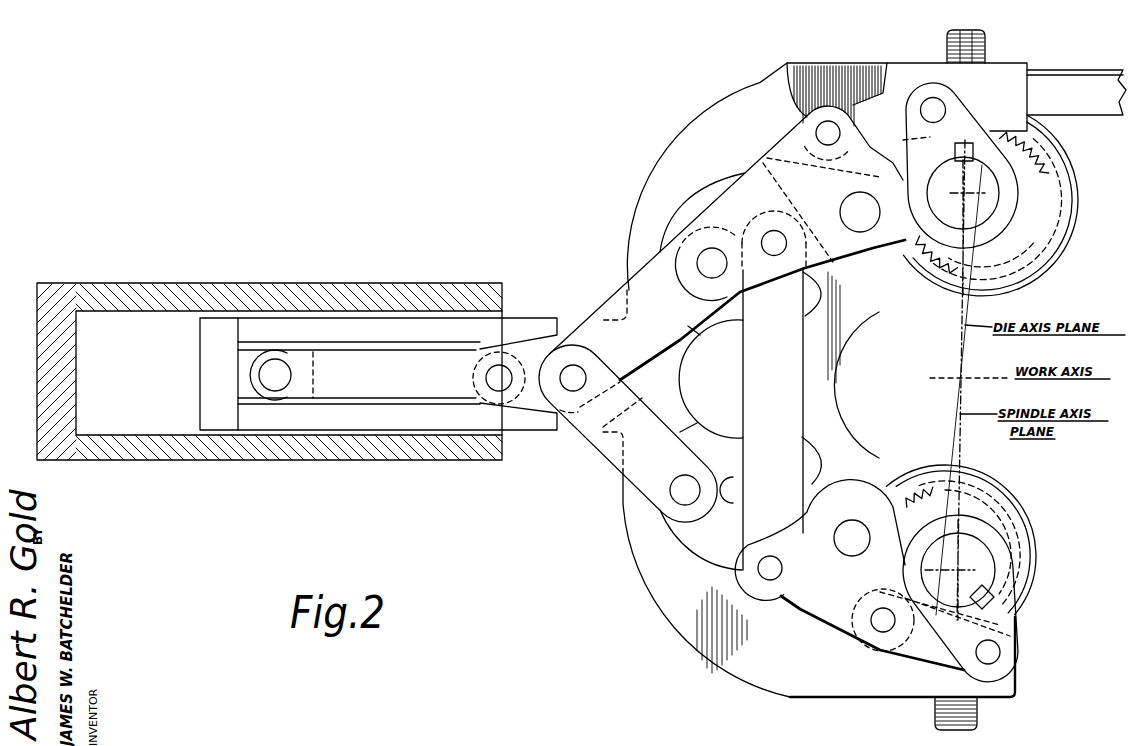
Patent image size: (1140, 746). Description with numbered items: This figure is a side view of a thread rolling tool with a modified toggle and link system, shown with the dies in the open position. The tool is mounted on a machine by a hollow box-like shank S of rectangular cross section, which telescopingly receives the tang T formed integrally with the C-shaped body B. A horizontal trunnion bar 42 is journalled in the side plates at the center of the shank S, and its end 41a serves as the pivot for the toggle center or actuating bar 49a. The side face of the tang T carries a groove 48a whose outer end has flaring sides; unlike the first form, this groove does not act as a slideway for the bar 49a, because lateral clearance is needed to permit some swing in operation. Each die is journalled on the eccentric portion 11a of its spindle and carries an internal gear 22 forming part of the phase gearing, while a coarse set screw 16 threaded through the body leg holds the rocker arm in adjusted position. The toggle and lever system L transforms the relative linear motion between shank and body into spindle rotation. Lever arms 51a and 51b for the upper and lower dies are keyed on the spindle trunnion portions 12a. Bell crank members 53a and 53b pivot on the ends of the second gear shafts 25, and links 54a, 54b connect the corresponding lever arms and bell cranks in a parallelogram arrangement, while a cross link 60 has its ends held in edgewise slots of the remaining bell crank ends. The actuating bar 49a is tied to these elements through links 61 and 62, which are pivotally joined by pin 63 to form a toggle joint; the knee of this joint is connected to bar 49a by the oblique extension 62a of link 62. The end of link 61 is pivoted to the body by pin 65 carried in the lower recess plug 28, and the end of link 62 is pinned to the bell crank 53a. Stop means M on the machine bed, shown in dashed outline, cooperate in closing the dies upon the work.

The trunnion bar 42 is at (248, 395).
The trunnion bar end 41a is at (278, 387).
The toggle center bar 49a is at (363, 393).
The groove 48a is at (492, 344).
The oblique extension 62a is at (533, 400).
The pin 63 is at (569, 391).
The link 62 is at (612, 310).
The link 61 is at (613, 457).
The pin 65 is at (670, 491).
The recess cover plug 28 is at (682, 556).
The cross link 60 is at (790, 418).
The shaft 25 is at (861, 232).
The bell crank member 53a is at (788, 70).
The link 54a is at (887, 63).
The bell crank member 53b is at (827, 627).
The link 54b is at (922, 650).
The lever arm 51a is at (1013, 185).
The lever arm 51b is at (1008, 605).
The trunnion portion 12a is at (953, 220).
The eccentric portion 11a is at (1030, 218).
The internal gear 22 is at (1025, 148).
The coarse set screw 16 is at (978, 716).
The stop means M is at (1084, 65).
The toggle and lever system L is at (758, 156).
The tang T is at (530, 324).
The shank S is at (441, 463).
The body B is at (791, 696).